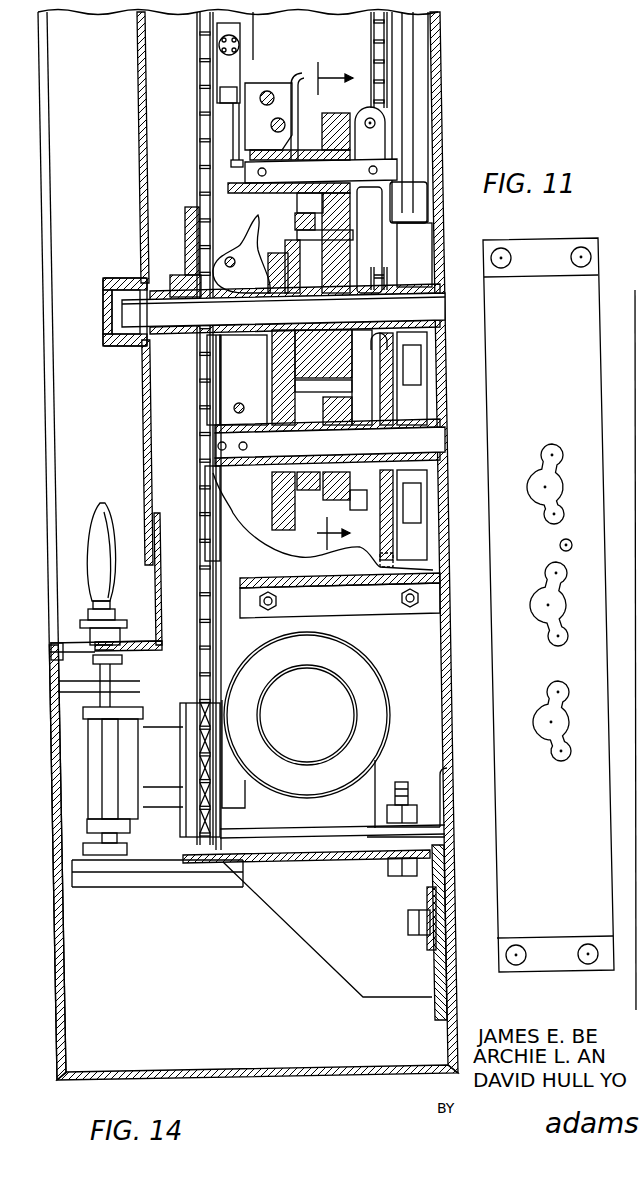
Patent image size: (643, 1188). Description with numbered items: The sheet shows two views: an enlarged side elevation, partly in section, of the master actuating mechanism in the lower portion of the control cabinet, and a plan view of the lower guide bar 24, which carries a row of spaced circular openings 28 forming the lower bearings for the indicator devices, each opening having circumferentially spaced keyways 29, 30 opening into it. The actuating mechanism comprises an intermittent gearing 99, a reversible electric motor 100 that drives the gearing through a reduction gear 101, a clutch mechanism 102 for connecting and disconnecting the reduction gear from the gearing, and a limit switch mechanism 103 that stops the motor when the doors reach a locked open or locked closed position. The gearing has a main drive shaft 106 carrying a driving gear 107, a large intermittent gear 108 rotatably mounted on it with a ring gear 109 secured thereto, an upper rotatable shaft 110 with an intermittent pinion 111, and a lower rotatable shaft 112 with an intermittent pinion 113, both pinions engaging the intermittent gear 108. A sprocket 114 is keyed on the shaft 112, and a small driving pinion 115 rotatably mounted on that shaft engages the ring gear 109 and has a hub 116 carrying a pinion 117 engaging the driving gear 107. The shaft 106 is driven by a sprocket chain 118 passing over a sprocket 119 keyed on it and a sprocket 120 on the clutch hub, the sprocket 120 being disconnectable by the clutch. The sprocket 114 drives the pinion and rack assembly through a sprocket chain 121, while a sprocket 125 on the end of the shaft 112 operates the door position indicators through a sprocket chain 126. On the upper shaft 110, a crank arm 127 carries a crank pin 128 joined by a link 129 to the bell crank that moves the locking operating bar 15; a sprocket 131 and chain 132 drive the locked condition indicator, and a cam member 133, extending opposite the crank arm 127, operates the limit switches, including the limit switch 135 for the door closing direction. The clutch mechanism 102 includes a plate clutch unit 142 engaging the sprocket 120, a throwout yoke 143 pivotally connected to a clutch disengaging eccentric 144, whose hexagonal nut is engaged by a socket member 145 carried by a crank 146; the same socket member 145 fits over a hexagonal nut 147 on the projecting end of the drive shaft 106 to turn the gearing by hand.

In FIG. 14, the locking operating bar 15 is at (343, 306).
In FIG. 11, the lower guide bar 24 is at (548, 930).
In FIG. 11, the circular openings 28 is at (532, 483).
In FIG. 11, the keyway 29 is at (549, 452).
In FIG. 11, the keyway 30 is at (568, 500).
In FIG. 14, the intermittent gearing 99 is at (413, 250).
In FIG. 14, the reversible electric motor 100 is at (370, 673).
In FIG. 14, the reduction gear 101 is at (370, 793).
In FIG. 14, the clutch mechanism 102 is at (162, 725).
In FIG. 14, the limit switch mechanism 103 is at (250, 42).
In FIG. 14, the drive shaft 106 is at (283, 310).
In FIG. 14, the driving gear 107 is at (268, 284).
In FIG. 14, the intermittent gear 108 is at (430, 237).
In FIG. 14, the ring gear 109 is at (300, 222).
In FIG. 14, the upper rotatable shaft 110 is at (354, 176).
In FIG. 14, the intermittent pinion 111 is at (357, 106).
In FIG. 14, the lower rotatable shaft 112 is at (330, 442).
In FIG. 14, the intermittent pinion 113 is at (365, 500).
In FIG. 14, the sprocket 114 is at (432, 383).
In FIG. 14, the small driving pinion 115 is at (312, 493).
In FIG. 14, the hub 116 is at (332, 394).
In FIG. 14, the pinion 117 is at (282, 543).
In FIG. 14, the sprocket chain 118 is at (212, 638).
In FIG. 14, the sprocket 119 is at (186, 207).
In FIG. 14, the sprocket 120 is at (215, 690).
In FIG. 14, the sprocket chain 121 is at (373, 20).
In FIG. 14, the sprocket 125 is at (236, 448).
In FIG. 14, the sprocket chain 126 is at (203, 136).
In FIG. 14, the crank arm 127 is at (393, 157).
In FIG. 14, the crank pin 128 is at (423, 188).
In FIG. 14, the link 129 is at (410, 70).
In FIG. 14, the sprocket 131 is at (298, 85).
In FIG. 14, the chain 132 is at (310, 47).
In FIG. 14, the cam member 133 is at (231, 150).
In FIG. 14, the limit switch 135 is at (231, 68).
In FIG. 14, the plate clutch unit 142 is at (187, 855).
In FIG. 14, the throwout yoke 143 is at (125, 797).
In FIG. 14, the clutch disengaging eccentric 144 is at (90, 770).
In FIG. 14, the socket member 145 is at (117, 670).
In FIG. 14, the crank 146 is at (137, 600).
In FIG. 14, the hexagonal nut 147 is at (127, 277).